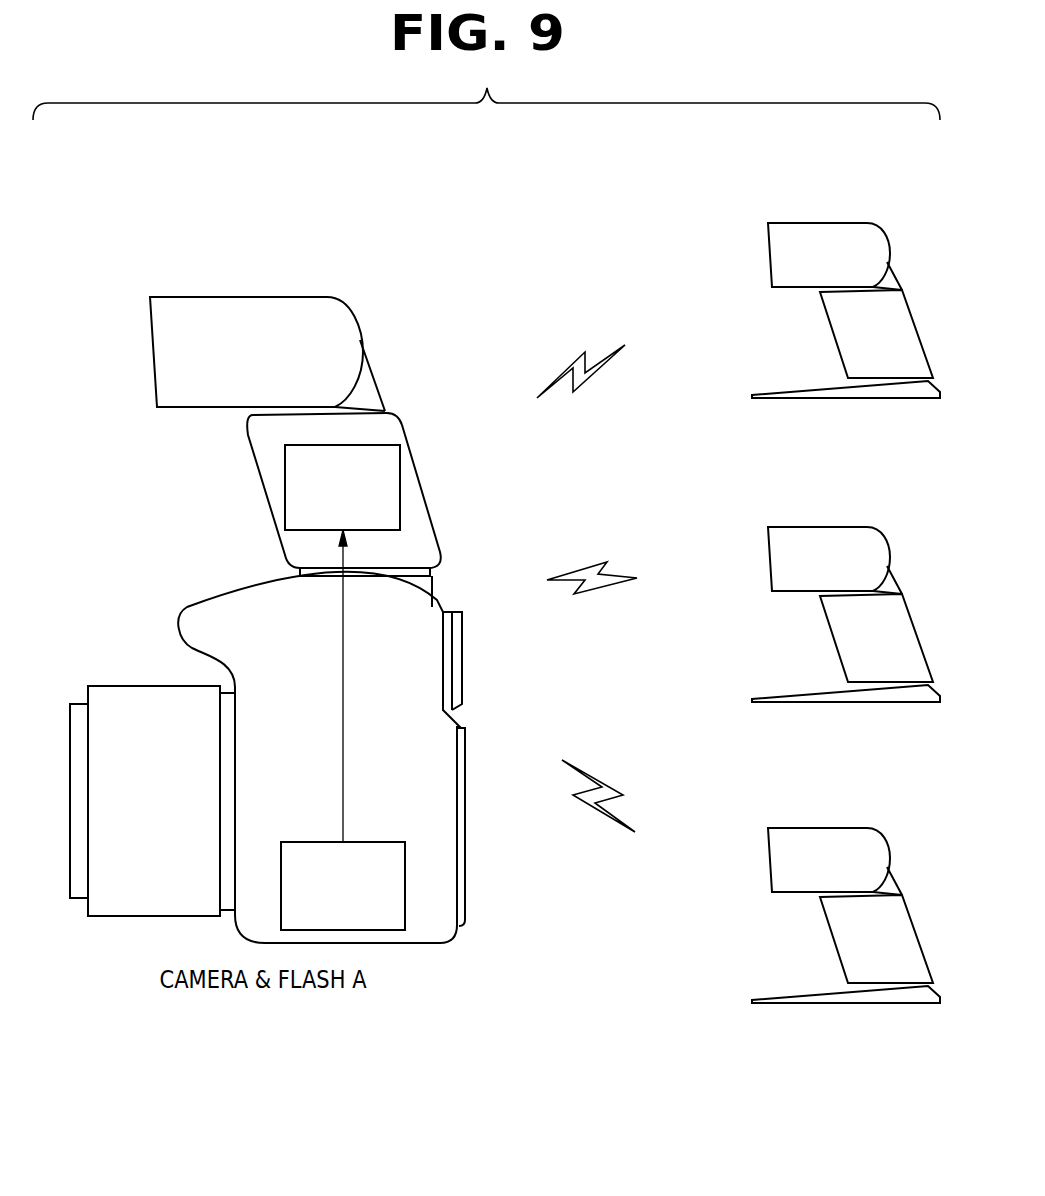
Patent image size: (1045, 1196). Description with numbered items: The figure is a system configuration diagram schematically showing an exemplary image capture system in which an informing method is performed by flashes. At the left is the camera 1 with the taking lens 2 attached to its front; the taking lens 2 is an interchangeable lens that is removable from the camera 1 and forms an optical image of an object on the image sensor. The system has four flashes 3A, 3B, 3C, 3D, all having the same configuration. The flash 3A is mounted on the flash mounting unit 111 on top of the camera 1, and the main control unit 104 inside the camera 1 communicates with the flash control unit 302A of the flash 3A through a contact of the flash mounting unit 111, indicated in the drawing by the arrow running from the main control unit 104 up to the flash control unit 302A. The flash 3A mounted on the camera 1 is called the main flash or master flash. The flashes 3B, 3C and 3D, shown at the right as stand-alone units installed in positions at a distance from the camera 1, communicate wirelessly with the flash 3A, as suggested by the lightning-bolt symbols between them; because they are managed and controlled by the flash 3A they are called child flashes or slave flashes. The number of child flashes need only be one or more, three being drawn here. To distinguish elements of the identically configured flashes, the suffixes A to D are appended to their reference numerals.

The camera 1 is at (186, 606).
The taking lens 2 is at (77, 698).
The flash 3A is at (160, 291).
The flash 3B is at (777, 219).
The flash 3C is at (834, 597).
The flash 3D is at (834, 898).
The main control unit 104 is at (405, 905).
The flash mounting unit 111 is at (433, 585).
The flash control unit 302A is at (400, 493).